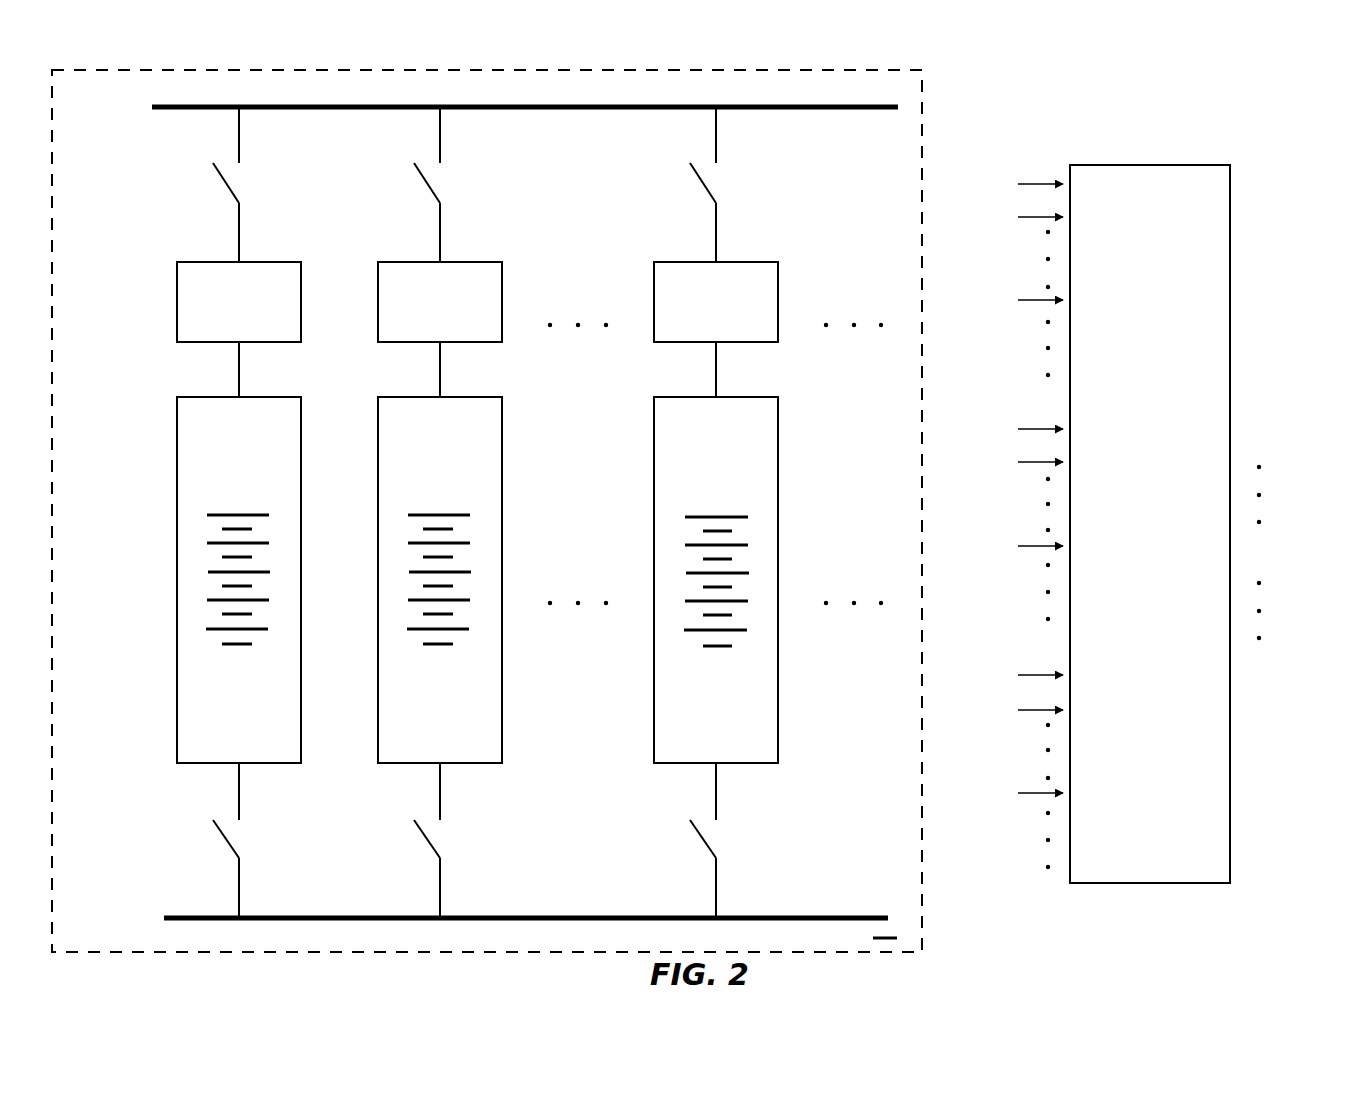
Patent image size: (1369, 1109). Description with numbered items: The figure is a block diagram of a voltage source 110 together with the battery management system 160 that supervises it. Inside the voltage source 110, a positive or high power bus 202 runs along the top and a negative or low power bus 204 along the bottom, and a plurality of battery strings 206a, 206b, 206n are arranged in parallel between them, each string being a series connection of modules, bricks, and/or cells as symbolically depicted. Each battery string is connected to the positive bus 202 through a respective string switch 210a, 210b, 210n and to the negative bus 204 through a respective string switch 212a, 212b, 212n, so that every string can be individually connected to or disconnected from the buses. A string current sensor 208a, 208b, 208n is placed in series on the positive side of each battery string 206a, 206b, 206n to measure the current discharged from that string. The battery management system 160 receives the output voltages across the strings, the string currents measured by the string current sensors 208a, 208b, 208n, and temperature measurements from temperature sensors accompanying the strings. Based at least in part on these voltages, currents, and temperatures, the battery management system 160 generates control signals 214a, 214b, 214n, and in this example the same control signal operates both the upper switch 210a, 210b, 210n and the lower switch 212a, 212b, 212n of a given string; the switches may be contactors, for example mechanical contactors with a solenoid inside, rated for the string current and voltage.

The voltage source 110 is at (924, 140).
The battery management system 160 is at (1232, 172).
The positive or high power bus 202 is at (172, 112).
The negative or low power bus 204 is at (180, 920).
The battery string 206a is at (302, 463).
The battery string 206b is at (503, 463).
The battery string 206n is at (779, 463).
The string current sensor 208a is at (302, 297).
The string current sensor 208b is at (503, 297).
The string current sensor 208n is at (779, 297).
The string switch 210a is at (198, 192).
The string switch 210b is at (399, 192).
The string switch 210n is at (675, 192).
The string switch 212a is at (198, 847).
The string switch 212b is at (399, 847).
The string switch 212n is at (675, 847).
The control signal 214a is at (247, 185).
The control signal 214b is at (467, 185).
The control signal 214n is at (742, 185).